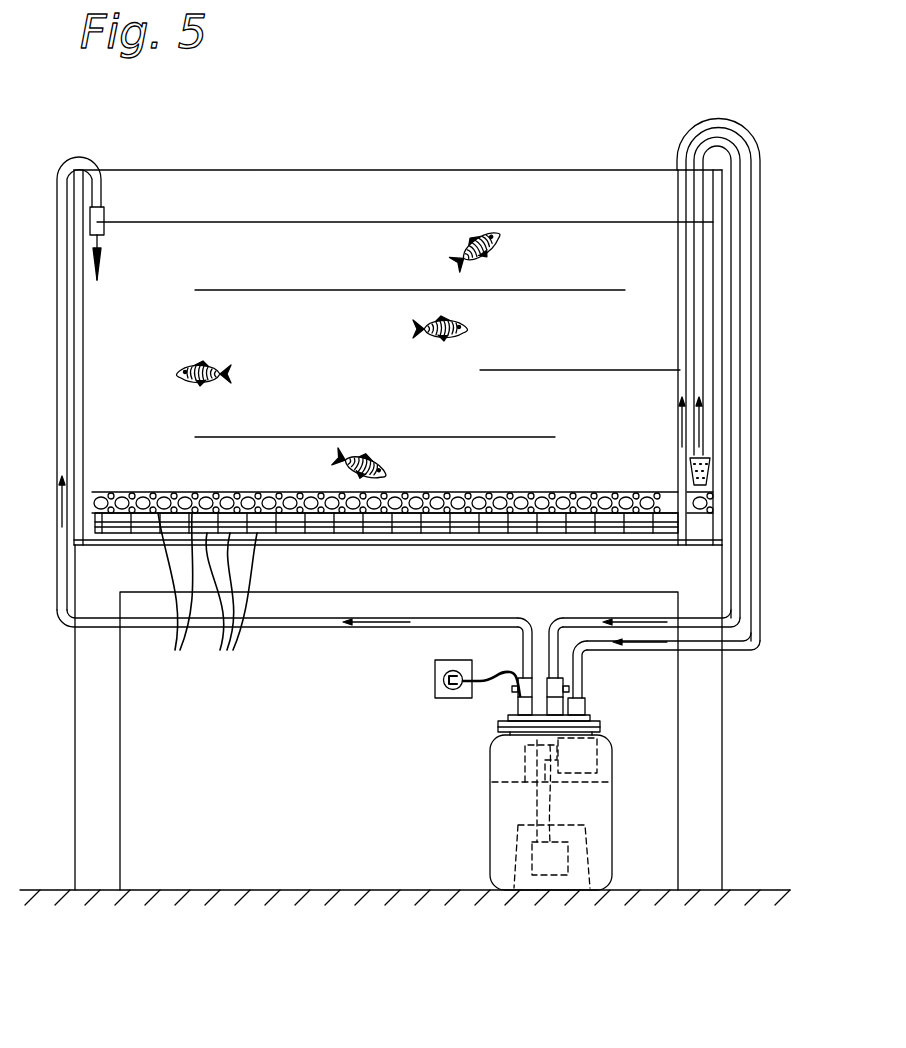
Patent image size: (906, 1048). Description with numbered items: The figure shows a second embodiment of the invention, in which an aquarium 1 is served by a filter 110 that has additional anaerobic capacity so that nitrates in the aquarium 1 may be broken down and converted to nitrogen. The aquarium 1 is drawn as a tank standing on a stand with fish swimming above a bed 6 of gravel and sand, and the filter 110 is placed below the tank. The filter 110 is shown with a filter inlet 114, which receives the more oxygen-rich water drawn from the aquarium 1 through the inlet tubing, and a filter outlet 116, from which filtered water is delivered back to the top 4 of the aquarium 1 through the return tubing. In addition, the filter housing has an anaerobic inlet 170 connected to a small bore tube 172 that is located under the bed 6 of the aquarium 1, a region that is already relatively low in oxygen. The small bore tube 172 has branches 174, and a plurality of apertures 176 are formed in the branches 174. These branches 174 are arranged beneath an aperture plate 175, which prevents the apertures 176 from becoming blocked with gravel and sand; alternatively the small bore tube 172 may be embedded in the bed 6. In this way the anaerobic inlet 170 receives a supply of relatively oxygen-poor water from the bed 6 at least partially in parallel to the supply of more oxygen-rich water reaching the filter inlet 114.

The aquarium 1 is at (447, 128).
The top of the aquarium 4 is at (205, 170).
The bed of the aquarium 6 is at (117, 500).
The aperture plate 175 is at (96, 514).
The apertures 176 is at (172, 595).
The branches 174 is at (230, 605).
The small bore tube 172 is at (755, 383).
The filter 110 is at (462, 748).
The filter outlet 116 is at (518, 702).
The filter inlet 114 is at (565, 696).
The anaerobic inlet 170 is at (586, 706).